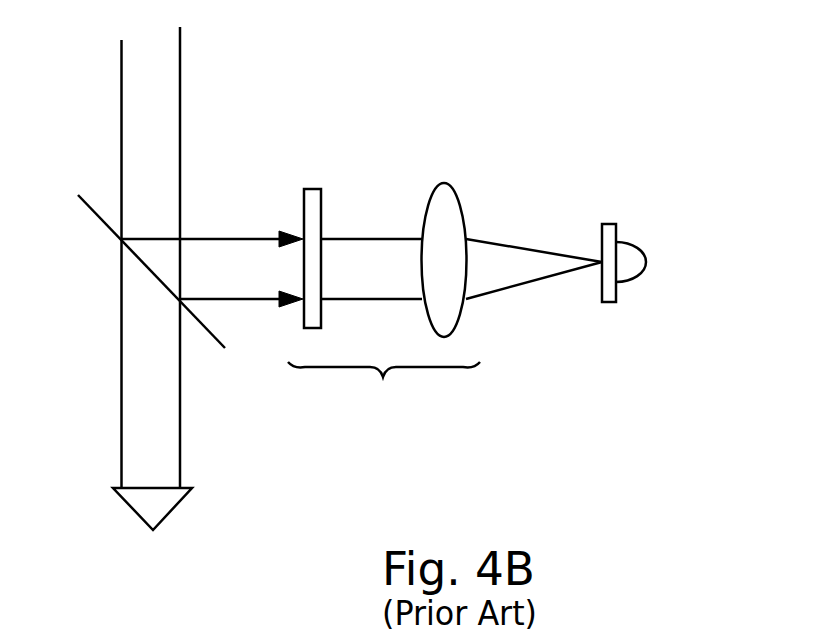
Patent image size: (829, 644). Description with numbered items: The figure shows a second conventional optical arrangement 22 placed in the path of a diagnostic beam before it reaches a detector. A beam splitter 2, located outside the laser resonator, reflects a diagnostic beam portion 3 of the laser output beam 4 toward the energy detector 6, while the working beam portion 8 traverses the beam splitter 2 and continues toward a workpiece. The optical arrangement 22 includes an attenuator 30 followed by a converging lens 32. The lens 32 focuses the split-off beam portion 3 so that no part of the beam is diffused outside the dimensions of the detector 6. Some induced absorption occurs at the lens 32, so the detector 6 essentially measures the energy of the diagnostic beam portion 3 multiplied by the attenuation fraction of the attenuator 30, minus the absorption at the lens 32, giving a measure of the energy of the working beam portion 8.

The beam splitter 2 is at (92, 213).
The diagnostic beam portion 3 is at (243, 279).
The laser output beam 4 is at (121, 116).
The energy detector 6 is at (631, 242).
The working beam portion 8 is at (121, 400).
The optical arrangement 22 is at (384, 386).
The attenuator 30 is at (322, 198).
The converging lens 32 is at (459, 199).